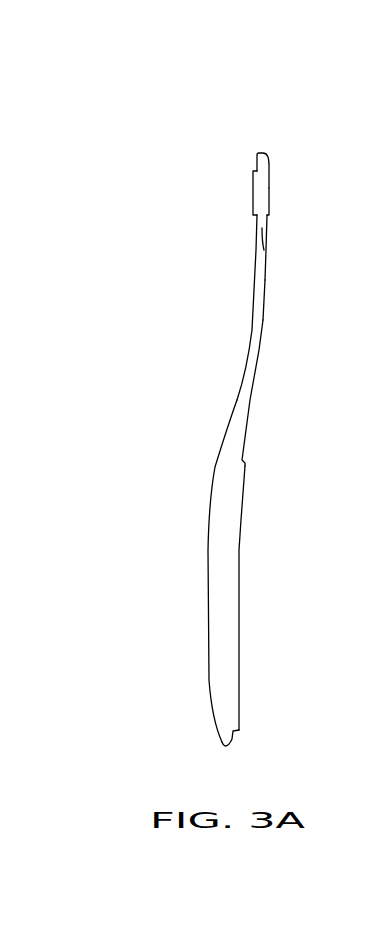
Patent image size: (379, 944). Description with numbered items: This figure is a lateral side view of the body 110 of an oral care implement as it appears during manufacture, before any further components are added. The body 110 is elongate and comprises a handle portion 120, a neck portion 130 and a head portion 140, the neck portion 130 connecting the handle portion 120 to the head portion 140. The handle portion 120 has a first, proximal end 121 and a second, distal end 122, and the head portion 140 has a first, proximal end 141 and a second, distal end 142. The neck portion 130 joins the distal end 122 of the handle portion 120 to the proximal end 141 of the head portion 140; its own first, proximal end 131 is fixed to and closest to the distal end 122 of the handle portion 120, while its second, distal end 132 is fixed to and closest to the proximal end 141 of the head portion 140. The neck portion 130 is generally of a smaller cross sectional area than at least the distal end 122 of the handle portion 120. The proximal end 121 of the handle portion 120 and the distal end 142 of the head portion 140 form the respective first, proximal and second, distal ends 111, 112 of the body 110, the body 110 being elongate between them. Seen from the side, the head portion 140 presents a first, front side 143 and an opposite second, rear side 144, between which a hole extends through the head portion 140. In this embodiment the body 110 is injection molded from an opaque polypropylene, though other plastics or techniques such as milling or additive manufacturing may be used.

The body 110 is at (192, 361).
The proximal end of the body 111 is at (287, 748).
The distal end of the body 112 is at (318, 122).
The handle portion 120 is at (222, 515).
The proximal end of the handle portion 121 is at (228, 745).
The distal end of the handle portion 122 is at (262, 328).
The neck portion 130 is at (256, 268).
The proximal end of the neck portion 131 is at (264, 305).
The distal end of the neck portion 132 is at (266, 250).
The head portion 140 is at (253, 187).
The proximal end of the head portion 141 is at (262, 237).
The distal end of the head portion 142 is at (258, 152).
The front side of the head portion 143 is at (253, 201).
The rear side of the head portion 144 is at (270, 202).